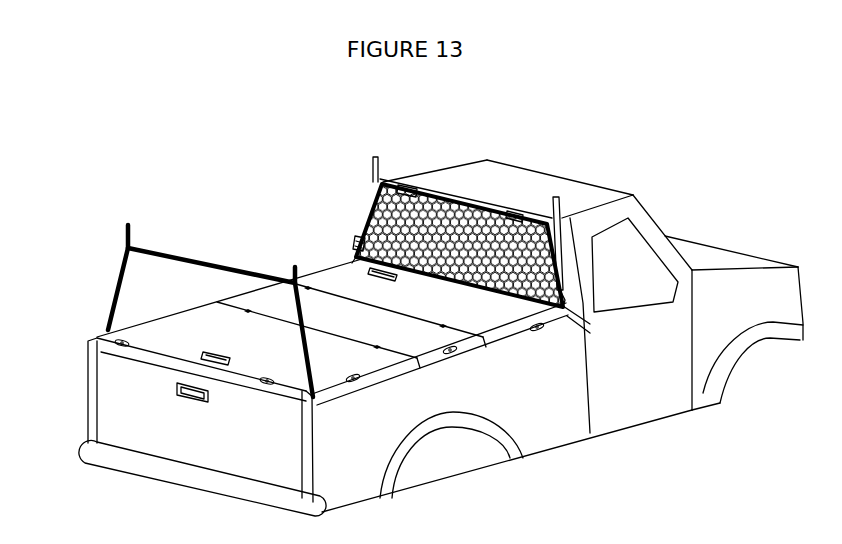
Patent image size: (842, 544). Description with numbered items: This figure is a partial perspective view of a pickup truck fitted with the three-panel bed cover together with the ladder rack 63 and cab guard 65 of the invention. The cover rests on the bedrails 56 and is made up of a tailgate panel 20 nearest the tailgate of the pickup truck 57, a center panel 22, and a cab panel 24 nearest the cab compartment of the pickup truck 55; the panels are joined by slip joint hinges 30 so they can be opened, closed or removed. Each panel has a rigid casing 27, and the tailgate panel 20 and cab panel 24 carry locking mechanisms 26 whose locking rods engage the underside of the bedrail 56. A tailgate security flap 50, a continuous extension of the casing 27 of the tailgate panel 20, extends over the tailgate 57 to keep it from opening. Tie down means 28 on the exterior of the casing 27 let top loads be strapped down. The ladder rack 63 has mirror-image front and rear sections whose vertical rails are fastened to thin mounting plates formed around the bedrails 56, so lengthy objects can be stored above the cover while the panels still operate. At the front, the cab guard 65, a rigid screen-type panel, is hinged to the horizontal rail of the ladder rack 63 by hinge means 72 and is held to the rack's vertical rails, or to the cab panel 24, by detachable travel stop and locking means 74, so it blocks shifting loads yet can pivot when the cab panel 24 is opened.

The tailgate panel 20 is at (135, 322).
The center panel 22 is at (233, 296).
The cab panel 24 is at (313, 272).
The locking mechanism 26 is at (215, 352).
The rigid casing 27 is at (172, 337).
The tie down means 28 is at (163, 351).
The slip joint hinge 30 is at (292, 265).
The tailgate security flap 50 is at (133, 365).
The cab compartment of the pickup truck 55 is at (523, 188).
The bedrail 56 is at (487, 373).
The tailgate of the pickup truck 57 is at (122, 402).
The ladder rack 63 is at (127, 224).
The cab guard 65 is at (570, 235).
The hinge means 72 is at (509, 210).
The detachable travel stop and locking means 74 is at (360, 244).